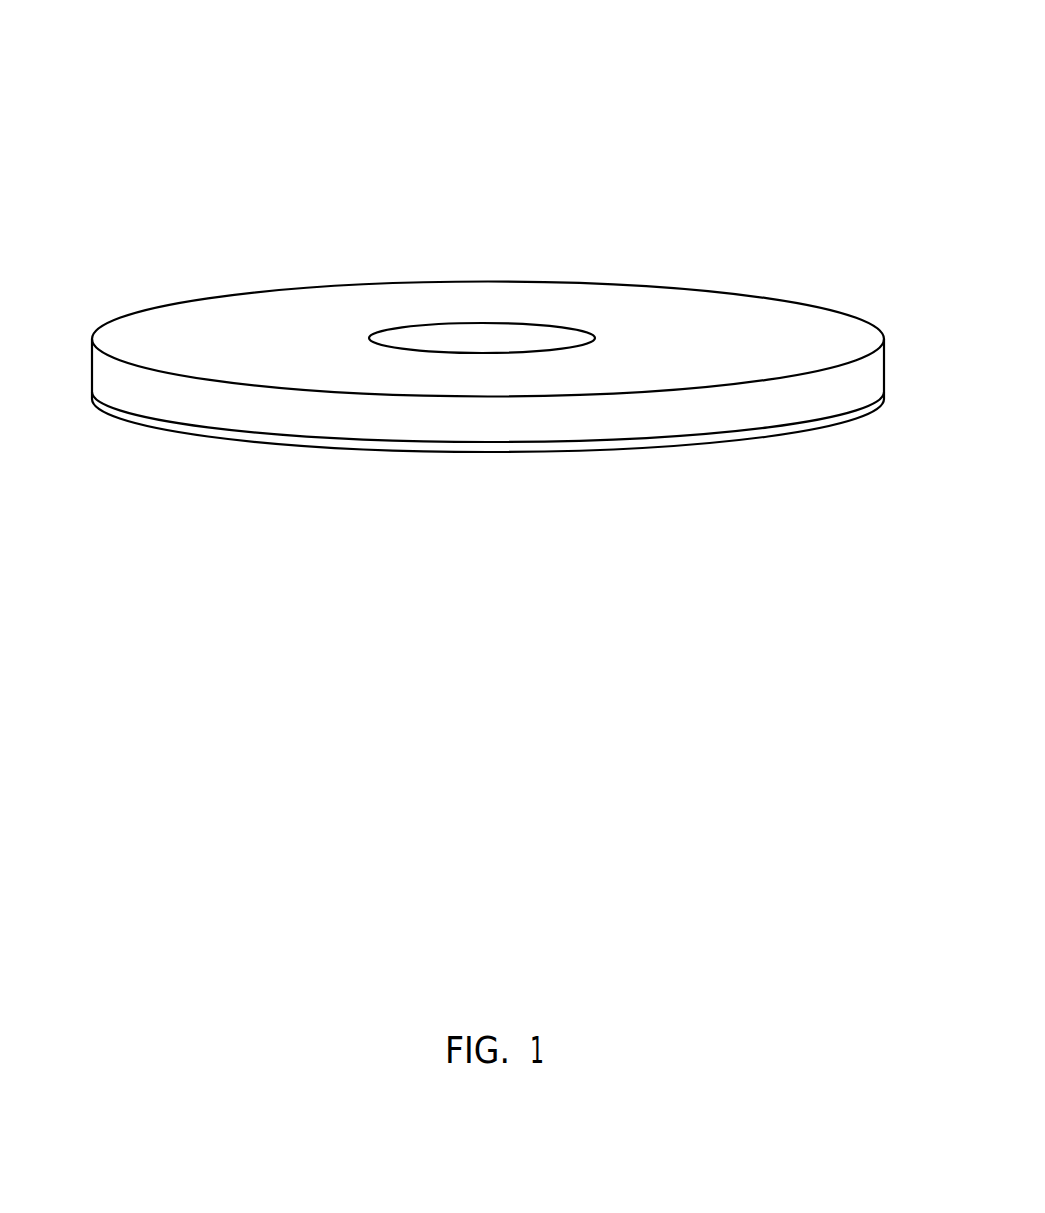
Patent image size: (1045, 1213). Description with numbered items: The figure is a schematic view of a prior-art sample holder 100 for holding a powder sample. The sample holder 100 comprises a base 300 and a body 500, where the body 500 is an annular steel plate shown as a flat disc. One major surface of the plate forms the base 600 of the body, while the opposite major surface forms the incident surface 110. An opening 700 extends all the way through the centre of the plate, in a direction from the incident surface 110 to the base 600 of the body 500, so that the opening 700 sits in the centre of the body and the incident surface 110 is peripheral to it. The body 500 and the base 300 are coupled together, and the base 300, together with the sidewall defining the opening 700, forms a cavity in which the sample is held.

The sample holder 100 is at (315, 152).
The incident surface 110 is at (707, 295).
The base 300 is at (830, 427).
The body 500 is at (92, 370).
The base of the body 600 is at (430, 442).
The opening 700 is at (485, 340).